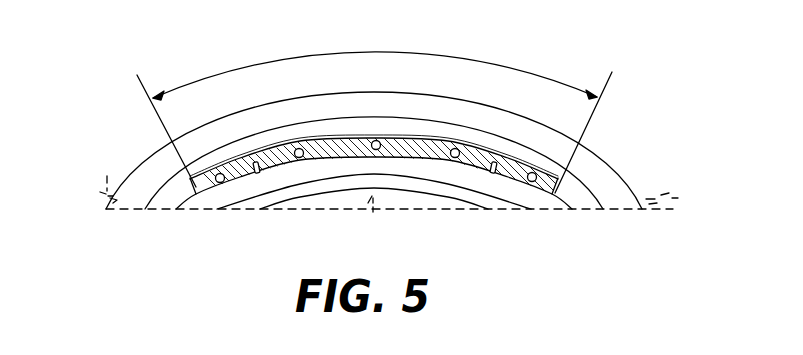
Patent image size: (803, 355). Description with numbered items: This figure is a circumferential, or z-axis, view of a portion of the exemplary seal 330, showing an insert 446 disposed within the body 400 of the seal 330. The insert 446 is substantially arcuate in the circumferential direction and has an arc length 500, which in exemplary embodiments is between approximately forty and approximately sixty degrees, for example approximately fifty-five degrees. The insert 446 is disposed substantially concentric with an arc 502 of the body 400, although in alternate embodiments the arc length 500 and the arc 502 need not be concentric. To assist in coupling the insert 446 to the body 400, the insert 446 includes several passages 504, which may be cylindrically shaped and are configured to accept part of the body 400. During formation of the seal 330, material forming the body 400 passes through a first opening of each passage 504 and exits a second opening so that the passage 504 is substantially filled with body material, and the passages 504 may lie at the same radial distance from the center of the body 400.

The seal 330 is at (665, 69).
The body 400 is at (112, 168).
The insert 446 is at (515, 163).
The arc length 500 is at (374, 108).
The arc 502 is at (610, 158).
The passage 504 is at (220, 183).